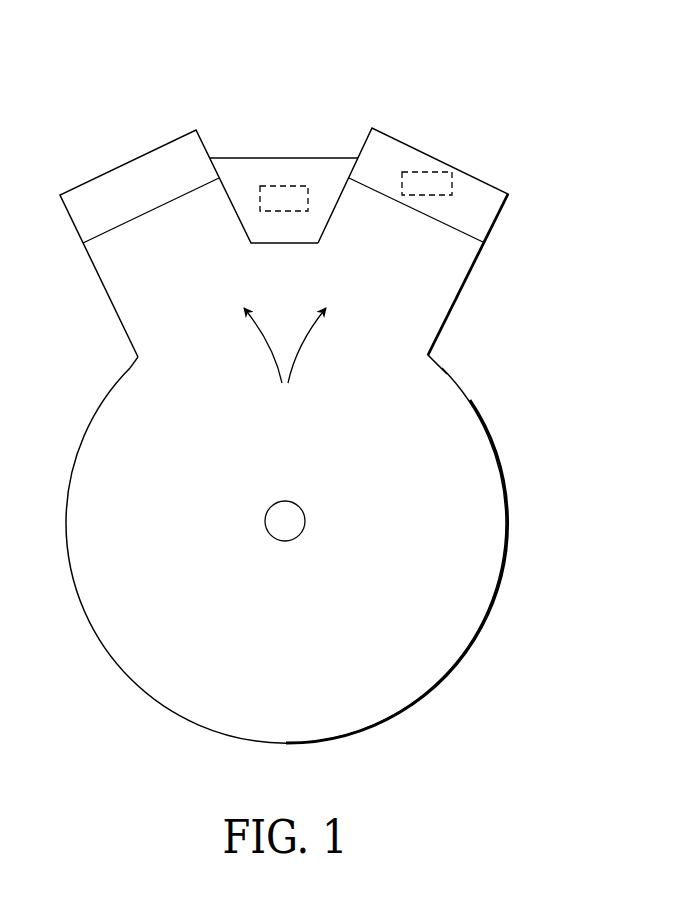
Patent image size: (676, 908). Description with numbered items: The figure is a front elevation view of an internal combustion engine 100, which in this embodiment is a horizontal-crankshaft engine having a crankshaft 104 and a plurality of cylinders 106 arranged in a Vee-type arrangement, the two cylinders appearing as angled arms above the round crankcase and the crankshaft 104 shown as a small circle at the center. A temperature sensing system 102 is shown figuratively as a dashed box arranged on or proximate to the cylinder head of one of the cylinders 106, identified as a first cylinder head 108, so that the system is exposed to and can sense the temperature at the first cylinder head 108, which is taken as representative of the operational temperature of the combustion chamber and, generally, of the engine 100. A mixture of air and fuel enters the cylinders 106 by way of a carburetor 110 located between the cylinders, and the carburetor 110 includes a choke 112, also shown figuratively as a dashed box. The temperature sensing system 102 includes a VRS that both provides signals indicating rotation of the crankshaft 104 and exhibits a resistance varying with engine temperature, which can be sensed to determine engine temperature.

The internal combustion engine 100 is at (495, 94).
The temperature sensing system 102 is at (421, 170).
The crankshaft 104 is at (305, 528).
The cylinders 106 is at (285, 360).
The first cylinder head 108 is at (364, 143).
The carburetor 110 is at (315, 172).
The choke 112 is at (268, 183).